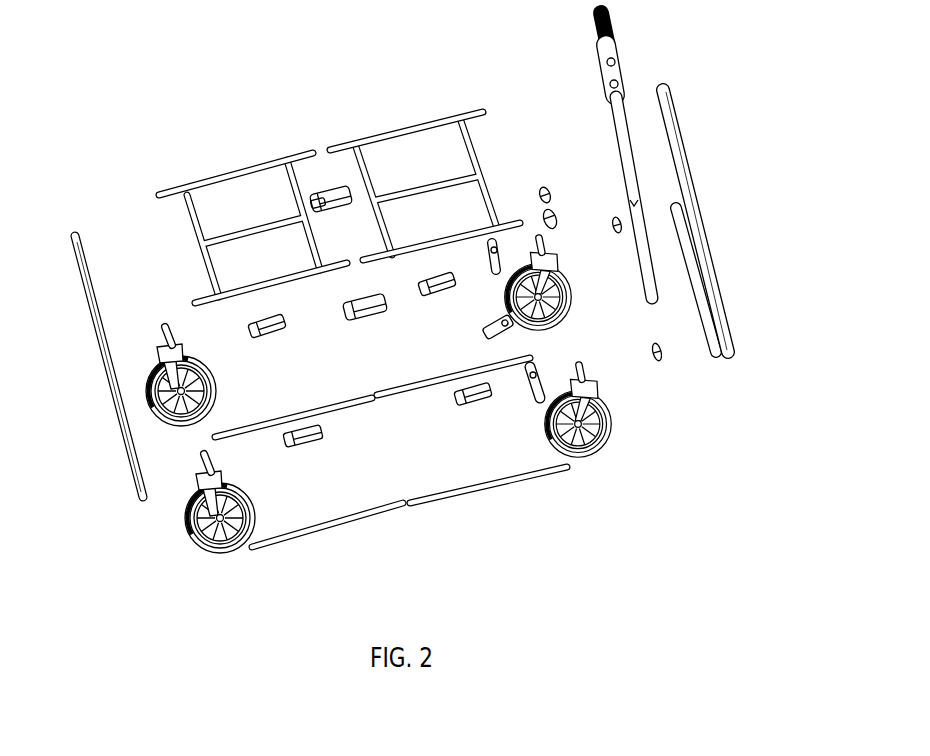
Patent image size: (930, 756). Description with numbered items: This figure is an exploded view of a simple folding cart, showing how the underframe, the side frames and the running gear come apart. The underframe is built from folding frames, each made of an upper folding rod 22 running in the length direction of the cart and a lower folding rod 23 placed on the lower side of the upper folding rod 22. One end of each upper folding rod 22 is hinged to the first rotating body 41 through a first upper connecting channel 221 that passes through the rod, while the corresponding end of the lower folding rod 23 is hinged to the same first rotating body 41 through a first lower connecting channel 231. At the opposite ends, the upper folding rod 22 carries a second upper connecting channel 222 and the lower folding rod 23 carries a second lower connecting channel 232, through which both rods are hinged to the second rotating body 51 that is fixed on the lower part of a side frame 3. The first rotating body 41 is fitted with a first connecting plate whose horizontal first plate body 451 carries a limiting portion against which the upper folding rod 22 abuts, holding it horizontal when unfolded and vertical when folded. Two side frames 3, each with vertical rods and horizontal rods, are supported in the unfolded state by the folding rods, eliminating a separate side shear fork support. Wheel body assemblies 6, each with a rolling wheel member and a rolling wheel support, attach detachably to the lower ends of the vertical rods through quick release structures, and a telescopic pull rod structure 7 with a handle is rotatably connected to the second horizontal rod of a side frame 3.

The upper folding rod 22 is at (189, 208).
The second upper connecting channel 222 is at (160, 193).
The first upper connecting channel 221 is at (313, 152).
The first plate body 451 is at (318, 194).
The first rotating body 41 is at (337, 189).
The pull rod structure 7 is at (620, 50).
The side frame 3 is at (716, 247).
The wheel body assembly 6 is at (611, 410).
The second rotating body 51 is at (305, 447).
The first lower connecting channel 231 is at (413, 507).
The second lower connecting channel 232 is at (256, 545).
The lower folding rod 23 is at (391, 491).